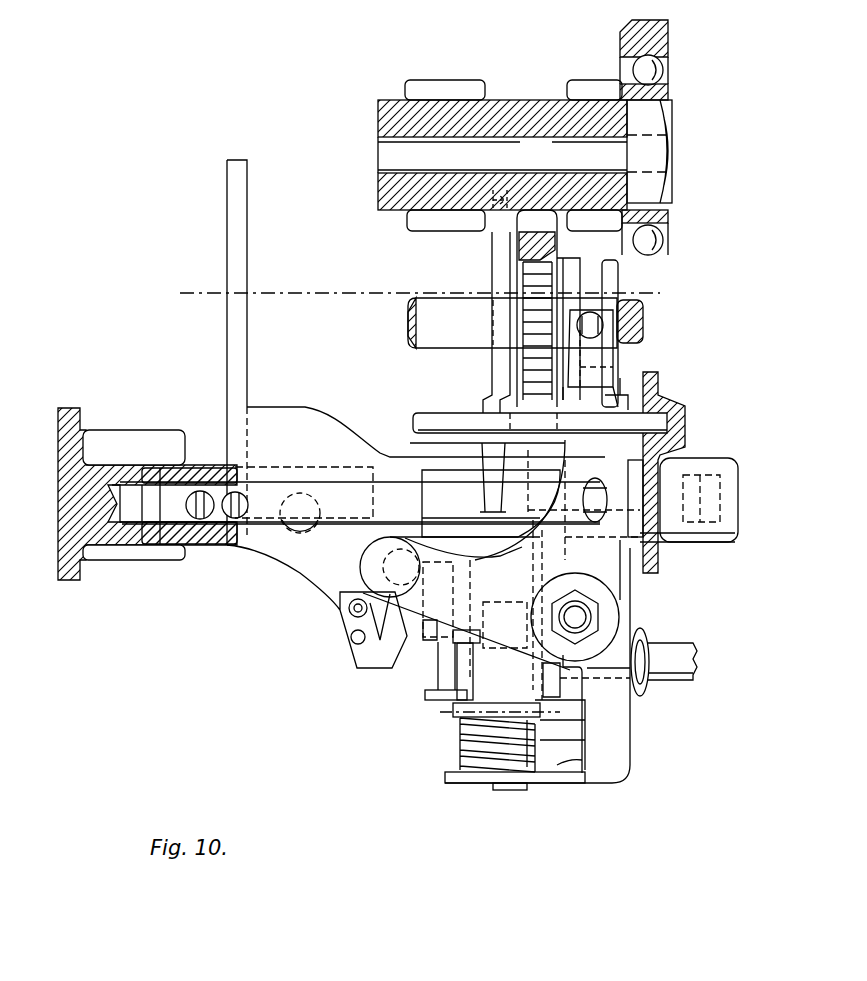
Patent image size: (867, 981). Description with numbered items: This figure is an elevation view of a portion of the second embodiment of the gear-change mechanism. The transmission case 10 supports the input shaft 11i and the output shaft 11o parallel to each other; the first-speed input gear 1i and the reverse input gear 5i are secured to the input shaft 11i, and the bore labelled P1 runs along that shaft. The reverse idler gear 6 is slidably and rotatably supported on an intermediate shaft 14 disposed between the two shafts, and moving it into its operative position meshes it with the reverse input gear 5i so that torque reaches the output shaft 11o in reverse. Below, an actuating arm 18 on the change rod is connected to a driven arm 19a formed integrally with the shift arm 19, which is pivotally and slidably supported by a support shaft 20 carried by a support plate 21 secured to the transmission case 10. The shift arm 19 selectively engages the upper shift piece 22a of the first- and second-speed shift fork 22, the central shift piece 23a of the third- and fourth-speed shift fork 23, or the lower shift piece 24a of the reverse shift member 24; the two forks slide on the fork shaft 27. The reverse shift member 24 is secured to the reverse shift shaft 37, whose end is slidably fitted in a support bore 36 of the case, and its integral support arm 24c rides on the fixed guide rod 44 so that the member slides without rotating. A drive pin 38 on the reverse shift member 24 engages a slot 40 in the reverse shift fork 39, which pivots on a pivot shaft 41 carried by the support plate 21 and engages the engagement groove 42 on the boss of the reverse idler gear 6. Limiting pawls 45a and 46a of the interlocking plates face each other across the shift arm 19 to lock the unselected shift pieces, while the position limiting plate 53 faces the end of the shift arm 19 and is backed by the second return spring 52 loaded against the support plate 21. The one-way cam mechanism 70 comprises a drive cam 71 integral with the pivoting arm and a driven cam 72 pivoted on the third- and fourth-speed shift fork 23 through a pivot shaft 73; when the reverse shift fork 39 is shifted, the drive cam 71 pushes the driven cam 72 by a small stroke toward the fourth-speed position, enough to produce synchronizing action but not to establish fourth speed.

The transmission case 10 is at (681, 411).
The input shaft 11i is at (386, 133).
The output shaft 11o is at (195, 294).
The first-speed input gear 1i is at (585, 92).
The reverse input gear 5i is at (435, 92).
The pressure passage P1 is at (537, 223).
The reverse idler gear 6 is at (525, 272).
The intermediate shaft 14 is at (408, 322).
The actuating arm 18 is at (670, 650).
The shift arm 19 is at (580, 692).
The driven arm 19a is at (633, 696).
The support shaft 20 is at (512, 770).
The support plate 21 is at (632, 756).
The first- and second-speed shift fork 22 is at (497, 372).
The upper shift piece 22a is at (438, 650).
The third- and fourth-speed shift fork 23 is at (243, 334).
The central shift piece 23a is at (460, 665).
The reverse shift member 24 is at (440, 514).
The lower shift piece 24a is at (465, 701).
The support arm 24c is at (484, 482).
The fork shaft 27 is at (272, 466).
The support bore 36 is at (140, 522).
The reverse shift shaft 37 is at (338, 506).
The drive pin 38 is at (597, 480).
The reverse shift fork 39 is at (608, 390).
The slot 40 is at (597, 524).
The pivot shaft 41 is at (576, 600).
The engagement groove 42 is at (603, 292).
The fixed guide rod 44 is at (427, 421).
The limiting pawl 45a is at (503, 604).
The limiting pawl 46a is at (468, 722).
The second return spring 52 is at (560, 768).
The position limiting plate 53 is at (480, 736).
The one-way cam mechanism 70 is at (335, 628).
The drive cam 71 is at (372, 553).
The driven cam 72 is at (466, 608).
The pivot shaft 73 is at (348, 609).